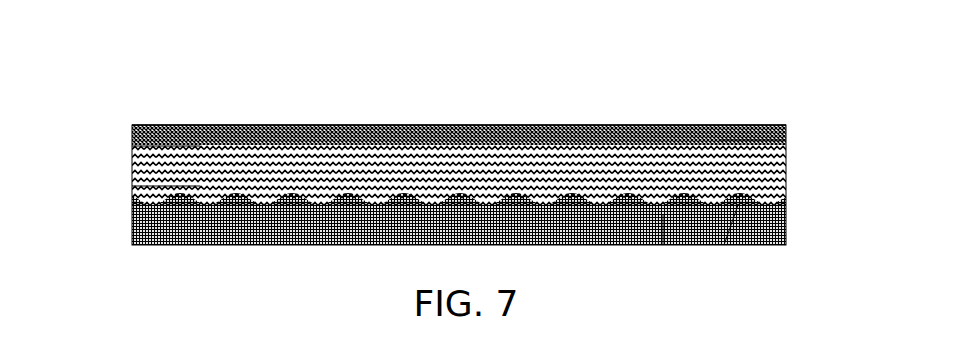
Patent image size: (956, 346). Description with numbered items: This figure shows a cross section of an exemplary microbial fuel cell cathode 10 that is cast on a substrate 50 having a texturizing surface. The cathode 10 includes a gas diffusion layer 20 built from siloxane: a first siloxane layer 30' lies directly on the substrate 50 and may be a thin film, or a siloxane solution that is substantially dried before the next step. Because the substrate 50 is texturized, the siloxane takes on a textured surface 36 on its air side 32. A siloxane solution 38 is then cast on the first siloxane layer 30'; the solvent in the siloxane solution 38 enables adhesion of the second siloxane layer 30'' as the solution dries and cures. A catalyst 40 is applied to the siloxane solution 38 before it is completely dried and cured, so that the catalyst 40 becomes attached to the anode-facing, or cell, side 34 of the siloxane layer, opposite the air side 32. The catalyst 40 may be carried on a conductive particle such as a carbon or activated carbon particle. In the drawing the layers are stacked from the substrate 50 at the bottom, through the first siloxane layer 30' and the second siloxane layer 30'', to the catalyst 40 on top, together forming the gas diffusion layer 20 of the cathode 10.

The microbial fuel cell cathode 10 is at (222, 101).
The gas diffusion layer 20 is at (786, 170).
The first siloxane layer 30' is at (126, 201).
The second siloxane layer 30'' is at (789, 118).
The air side 32 is at (663, 245).
The anode-facing side 34 is at (665, 140).
The textured surface 36 is at (724, 245).
The siloxane solution 38 is at (136, 150).
The catalyst 40 is at (166, 127).
The substrate 50 is at (786, 229).